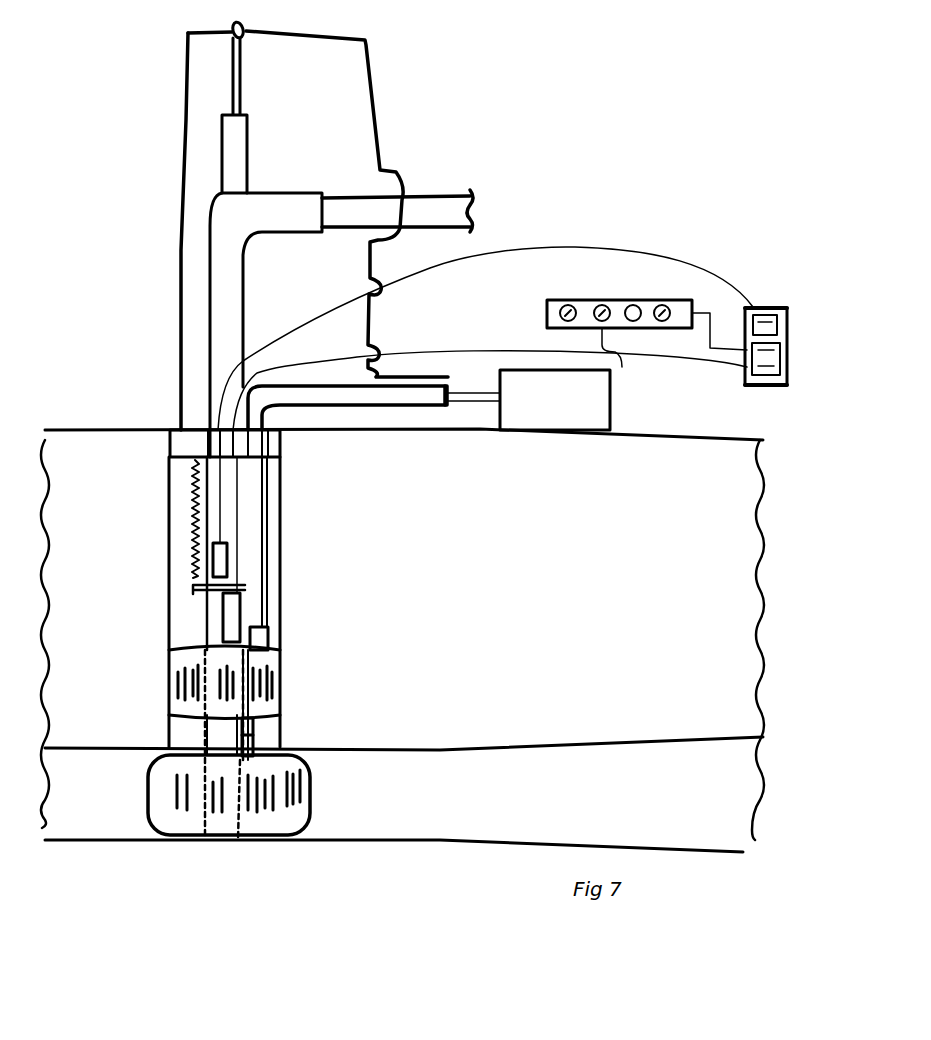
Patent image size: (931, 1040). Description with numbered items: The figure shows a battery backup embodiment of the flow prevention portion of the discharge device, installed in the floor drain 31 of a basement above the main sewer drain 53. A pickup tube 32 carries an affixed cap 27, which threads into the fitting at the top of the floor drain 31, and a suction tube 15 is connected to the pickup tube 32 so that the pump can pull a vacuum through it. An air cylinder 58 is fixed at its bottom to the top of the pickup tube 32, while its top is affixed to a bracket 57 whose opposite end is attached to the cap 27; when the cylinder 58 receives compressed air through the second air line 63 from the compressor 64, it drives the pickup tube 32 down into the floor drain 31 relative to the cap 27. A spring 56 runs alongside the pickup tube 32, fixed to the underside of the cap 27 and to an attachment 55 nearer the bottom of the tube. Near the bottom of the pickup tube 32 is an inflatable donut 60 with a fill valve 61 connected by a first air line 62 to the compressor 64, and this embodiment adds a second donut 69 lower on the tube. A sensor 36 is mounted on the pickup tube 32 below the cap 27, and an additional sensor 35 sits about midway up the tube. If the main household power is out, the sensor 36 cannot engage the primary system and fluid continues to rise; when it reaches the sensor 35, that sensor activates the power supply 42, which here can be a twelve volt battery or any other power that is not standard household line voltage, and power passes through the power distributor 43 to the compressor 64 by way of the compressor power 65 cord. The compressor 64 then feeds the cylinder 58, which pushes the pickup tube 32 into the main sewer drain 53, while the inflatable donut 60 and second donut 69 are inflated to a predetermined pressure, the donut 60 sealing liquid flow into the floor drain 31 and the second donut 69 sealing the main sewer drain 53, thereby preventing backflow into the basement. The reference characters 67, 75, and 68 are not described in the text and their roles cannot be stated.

The second air line 63 is at (378, 108).
The bracket 57 is at (180, 258).
The cylinder 58 is at (243, 152).
The suction tube 15 is at (448, 193).
The pickup tube 32 is at (210, 333).
The cable conduit 67 is at (403, 387).
The first air line 62 is at (433, 415).
The compressor 64 is at (550, 420).
The power distributor 43 is at (612, 300).
The power supply 42 is at (770, 308).
The compressor power cord 65 is at (624, 370).
The ground surface 75 is at (700, 437).
The cap 27 is at (283, 440).
The floor drain 31 is at (283, 535).
The spring 56 is at (190, 510).
The sensor 35 is at (213, 558).
The sensor 36 is at (248, 607).
The attachment 55 is at (213, 590).
The fill valve 61 is at (272, 642).
The inflatable donut 60 is at (273, 678).
The check valve 68 is at (253, 747).
The main sewer drain 53 is at (507, 810).
The second donut 69 is at (288, 820).